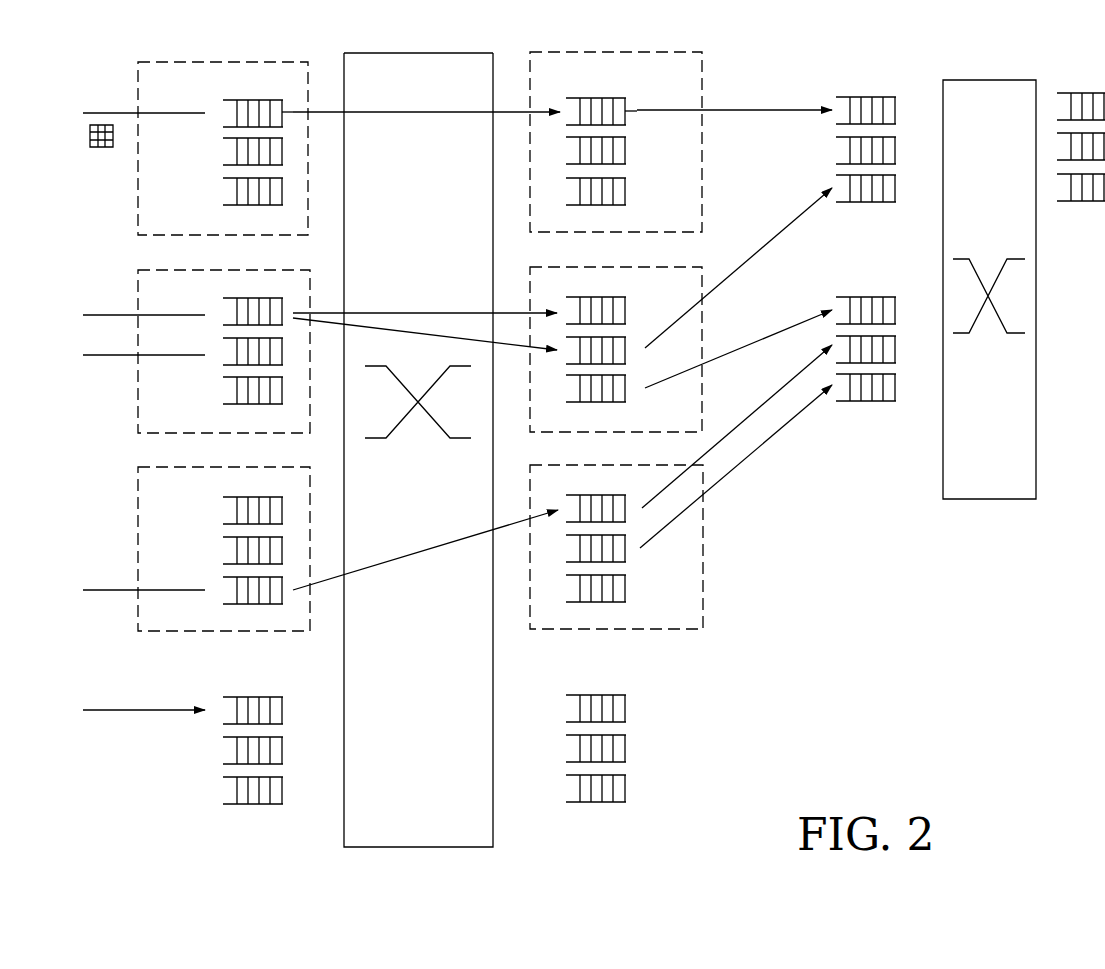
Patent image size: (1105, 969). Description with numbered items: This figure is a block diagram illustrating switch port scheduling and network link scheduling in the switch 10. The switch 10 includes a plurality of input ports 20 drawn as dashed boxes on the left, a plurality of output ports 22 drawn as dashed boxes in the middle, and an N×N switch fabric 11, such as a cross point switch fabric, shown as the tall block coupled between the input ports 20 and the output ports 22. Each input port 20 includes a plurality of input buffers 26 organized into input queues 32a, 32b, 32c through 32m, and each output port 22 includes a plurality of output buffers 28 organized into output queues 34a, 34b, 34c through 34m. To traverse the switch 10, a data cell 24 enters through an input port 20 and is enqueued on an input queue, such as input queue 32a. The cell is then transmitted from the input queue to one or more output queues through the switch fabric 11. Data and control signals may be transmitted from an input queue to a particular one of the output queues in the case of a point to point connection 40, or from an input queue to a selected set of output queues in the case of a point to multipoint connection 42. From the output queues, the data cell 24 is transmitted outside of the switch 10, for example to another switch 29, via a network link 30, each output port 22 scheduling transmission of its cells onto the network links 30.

The switch 10 is at (430, 38).
The switch fabric 11 is at (394, 53).
The input port 20 is at (176, 58).
The output port 22 is at (703, 143).
The data cell 24 is at (92, 148).
The input buffer 26 is at (288, 103).
The output buffer 28 is at (624, 103).
The another switch 29 is at (998, 66).
The network link 30 is at (802, 108).
The input queue 32a is at (282, 98).
The input queue 32b is at (214, 140).
The input queue 32c is at (214, 180).
The input queue 32m is at (214, 778).
The output queue 34a is at (626, 96).
The output queue 34b is at (636, 138).
The output queue 34c is at (636, 178).
The output queue 34m is at (642, 778).
The point to point connection 40 is at (462, 110).
The point to multipoint connection 42 is at (478, 312).